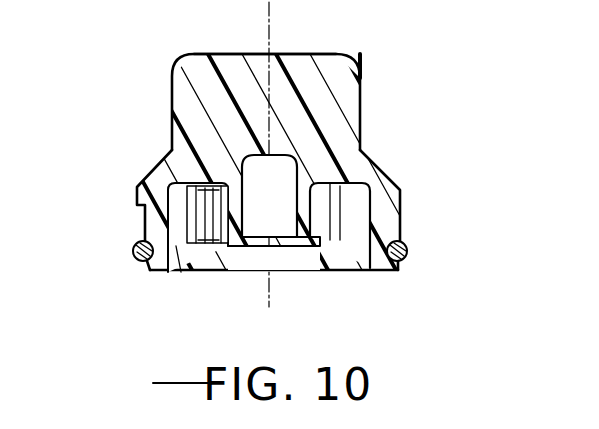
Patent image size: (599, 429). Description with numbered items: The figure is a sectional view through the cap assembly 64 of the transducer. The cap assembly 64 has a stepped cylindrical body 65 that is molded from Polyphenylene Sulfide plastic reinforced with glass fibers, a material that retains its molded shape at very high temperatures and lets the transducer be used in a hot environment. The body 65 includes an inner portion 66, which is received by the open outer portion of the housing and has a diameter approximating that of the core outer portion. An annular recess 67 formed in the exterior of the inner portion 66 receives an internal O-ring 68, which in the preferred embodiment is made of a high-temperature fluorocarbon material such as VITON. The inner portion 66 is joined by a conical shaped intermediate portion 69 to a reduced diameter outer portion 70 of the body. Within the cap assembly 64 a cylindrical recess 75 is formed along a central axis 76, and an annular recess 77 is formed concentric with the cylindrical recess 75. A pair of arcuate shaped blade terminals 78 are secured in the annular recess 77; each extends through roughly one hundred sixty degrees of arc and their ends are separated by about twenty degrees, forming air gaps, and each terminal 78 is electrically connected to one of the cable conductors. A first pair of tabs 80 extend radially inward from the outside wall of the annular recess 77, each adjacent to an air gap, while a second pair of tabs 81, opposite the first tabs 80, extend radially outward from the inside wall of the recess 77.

The cap assembly 64 is at (390, 50).
The stepped cylindrical body 65 is at (338, 128).
The inner portion 66 is at (137, 212).
The annular recess 67 is at (390, 232).
The internal O-ring 68 is at (407, 243).
The intermediate portion 69 is at (157, 173).
The outer portion 70 is at (347, 100).
The cylindrical recess 75 is at (282, 202).
The central axis 76 is at (275, 283).
The annular recess 77 is at (358, 268).
The blade terminals 78 is at (322, 271).
The first pair of tabs 80 is at (182, 273).
The second pair of tabs 81 is at (227, 272).